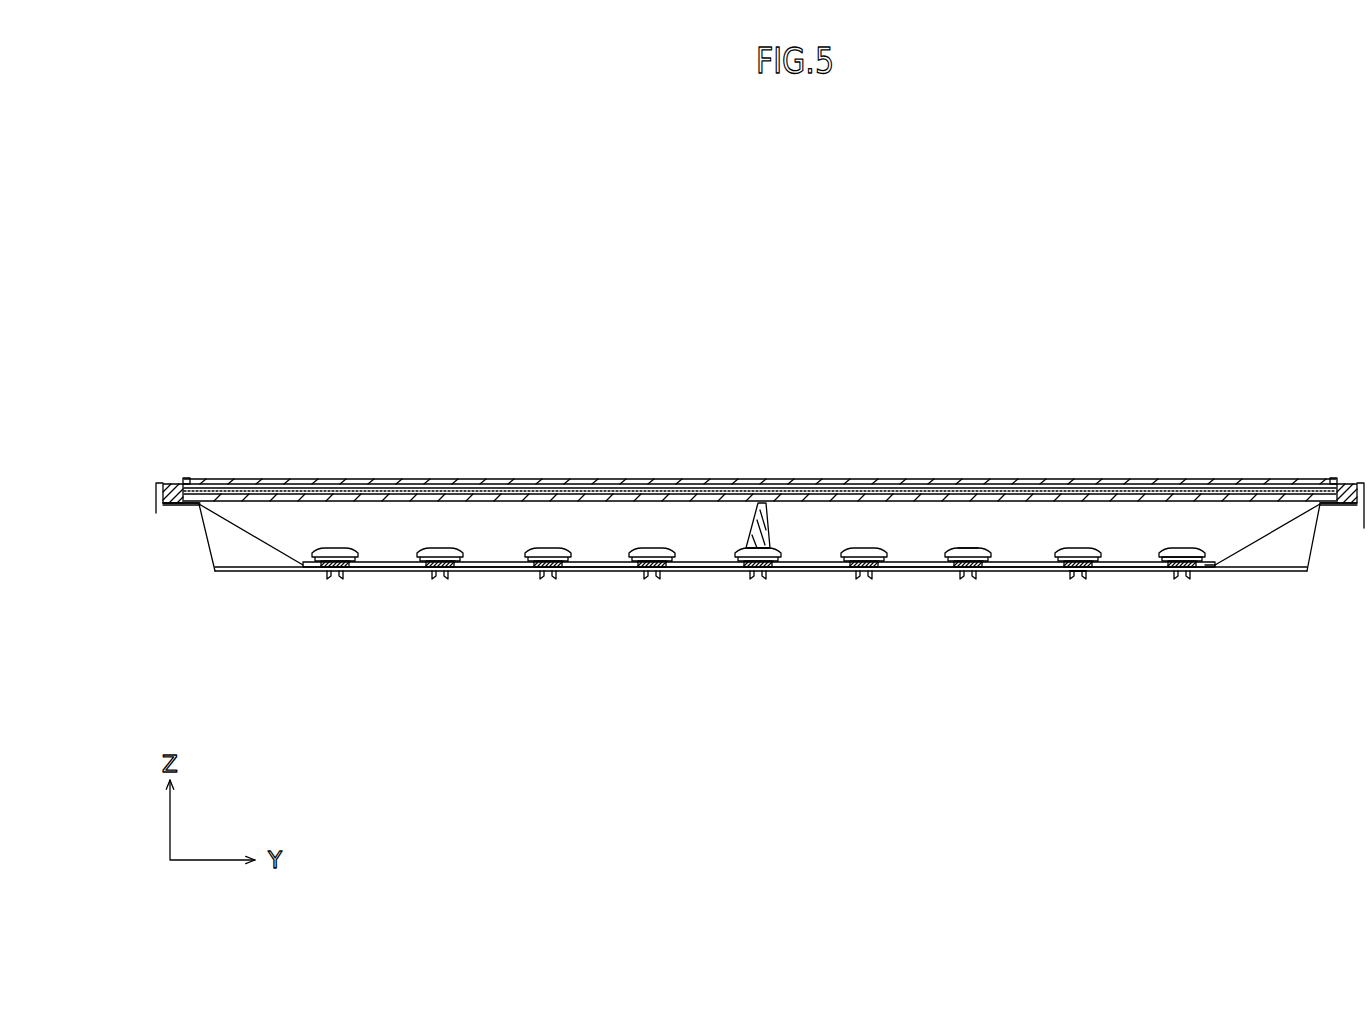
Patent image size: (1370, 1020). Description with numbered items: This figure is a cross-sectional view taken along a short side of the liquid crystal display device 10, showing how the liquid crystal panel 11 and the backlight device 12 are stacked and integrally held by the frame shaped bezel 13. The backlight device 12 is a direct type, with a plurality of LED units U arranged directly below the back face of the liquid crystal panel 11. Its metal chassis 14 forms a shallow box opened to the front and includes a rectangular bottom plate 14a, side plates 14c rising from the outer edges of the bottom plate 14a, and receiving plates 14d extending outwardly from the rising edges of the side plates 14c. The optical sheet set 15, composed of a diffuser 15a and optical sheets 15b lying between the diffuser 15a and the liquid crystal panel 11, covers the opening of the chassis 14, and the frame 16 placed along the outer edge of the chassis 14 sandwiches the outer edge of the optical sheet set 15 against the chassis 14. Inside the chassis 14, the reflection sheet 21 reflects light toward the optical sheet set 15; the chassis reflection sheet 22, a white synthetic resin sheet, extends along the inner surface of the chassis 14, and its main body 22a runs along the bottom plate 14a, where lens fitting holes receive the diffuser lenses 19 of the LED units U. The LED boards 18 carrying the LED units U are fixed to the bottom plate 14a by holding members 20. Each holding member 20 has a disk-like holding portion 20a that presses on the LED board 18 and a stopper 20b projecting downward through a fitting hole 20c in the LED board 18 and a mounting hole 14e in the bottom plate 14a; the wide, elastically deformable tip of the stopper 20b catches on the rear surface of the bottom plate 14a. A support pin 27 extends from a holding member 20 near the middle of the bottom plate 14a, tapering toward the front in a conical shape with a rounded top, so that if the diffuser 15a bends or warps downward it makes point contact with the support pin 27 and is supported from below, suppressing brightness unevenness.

The liquid crystal display device 10 is at (858, 352).
The liquid crystal panel 11 is at (574, 479).
The backlight device 12 is at (625, 648).
The bezel 13 is at (186, 484).
The chassis 14 is at (750, 589).
The bottom plate 14a is at (265, 572).
The side plate 14c is at (207, 560).
The receiving plate 14d is at (181, 508).
The mounting hole 14e is at (1077, 574).
The optical sheet set 15 is at (760, 441).
The diffuser 15a is at (648, 421).
The optical sheets 15b is at (678, 487).
The frame 16 is at (176, 489).
The LED board 18 is at (545, 568).
The diffuser lens 19 is at (437, 548).
The holding member 20 is at (781, 554).
The holding portion 20a is at (780, 552).
The stopper 20b is at (1085, 576).
The fitting hole 20c is at (1182, 557).
The reflection sheet 21 is at (759, 488).
The chassis reflection sheet 22 is at (250, 534).
The main body 22a is at (1115, 562).
The support pin 27 is at (762, 520).
The LED unit U is at (540, 538).